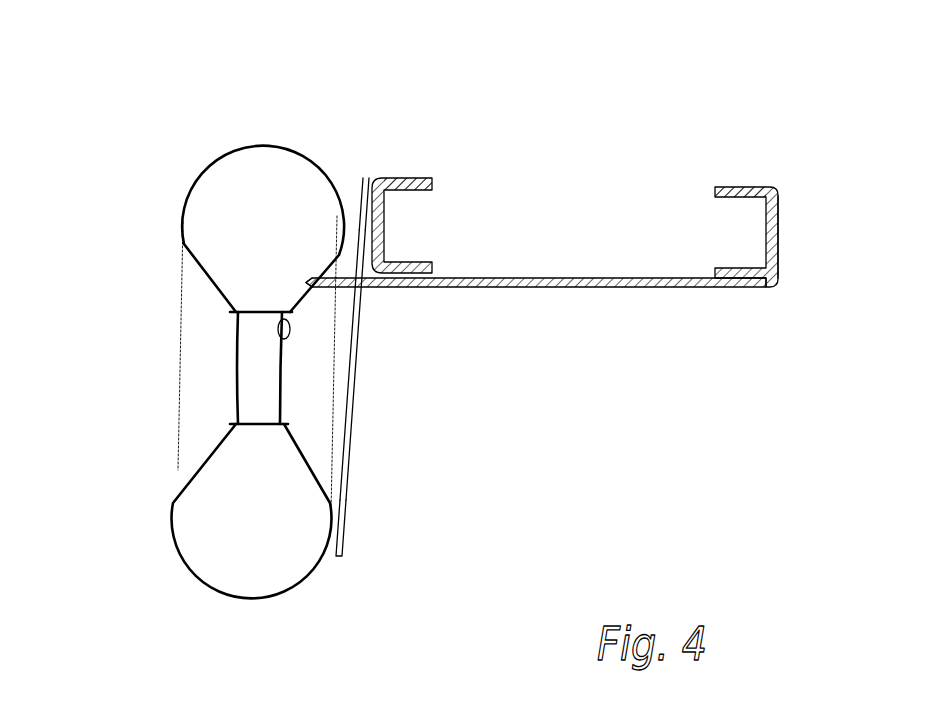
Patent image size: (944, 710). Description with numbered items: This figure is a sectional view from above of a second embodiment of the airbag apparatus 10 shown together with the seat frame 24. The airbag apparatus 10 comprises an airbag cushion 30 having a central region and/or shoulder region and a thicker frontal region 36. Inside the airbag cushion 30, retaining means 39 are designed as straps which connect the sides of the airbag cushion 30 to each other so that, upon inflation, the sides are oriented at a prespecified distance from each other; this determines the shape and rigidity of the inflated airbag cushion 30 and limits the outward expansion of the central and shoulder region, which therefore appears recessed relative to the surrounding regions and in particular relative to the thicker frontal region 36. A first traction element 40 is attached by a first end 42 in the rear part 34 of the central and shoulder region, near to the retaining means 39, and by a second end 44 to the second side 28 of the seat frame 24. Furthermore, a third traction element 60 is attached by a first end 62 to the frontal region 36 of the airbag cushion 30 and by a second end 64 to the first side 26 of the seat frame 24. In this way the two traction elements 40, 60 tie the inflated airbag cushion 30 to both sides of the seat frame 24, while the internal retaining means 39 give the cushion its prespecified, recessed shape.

The airbag apparatus 10 is at (126, 142).
The seat frame 24 is at (433, 187).
The first side of the seat frame 26 is at (406, 182).
The second side of the seat frame 28 is at (745, 187).
The airbag cushion 30 is at (217, 150).
The rear part of the central region 34 is at (278, 348).
The frontal region 36 is at (263, 595).
The retaining means 39 is at (263, 303).
The first traction element 40 is at (603, 288).
The first end of the first traction element 42 is at (305, 311).
The second end of the first traction element 44 is at (779, 232).
The third traction element 60 is at (363, 346).
The first end of the third traction element 62 is at (336, 532).
The second end of the third traction element 64 is at (353, 188).